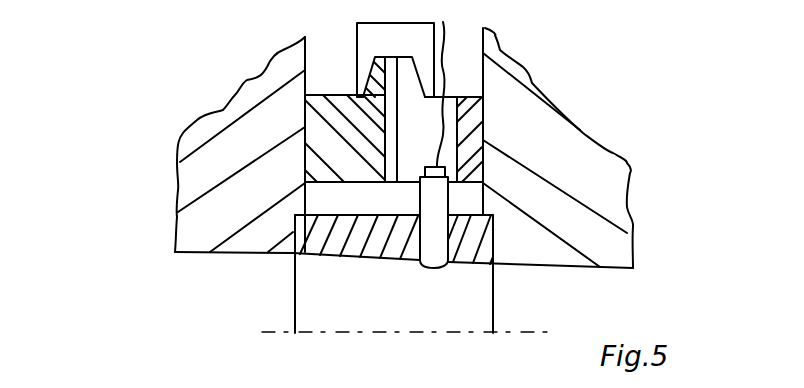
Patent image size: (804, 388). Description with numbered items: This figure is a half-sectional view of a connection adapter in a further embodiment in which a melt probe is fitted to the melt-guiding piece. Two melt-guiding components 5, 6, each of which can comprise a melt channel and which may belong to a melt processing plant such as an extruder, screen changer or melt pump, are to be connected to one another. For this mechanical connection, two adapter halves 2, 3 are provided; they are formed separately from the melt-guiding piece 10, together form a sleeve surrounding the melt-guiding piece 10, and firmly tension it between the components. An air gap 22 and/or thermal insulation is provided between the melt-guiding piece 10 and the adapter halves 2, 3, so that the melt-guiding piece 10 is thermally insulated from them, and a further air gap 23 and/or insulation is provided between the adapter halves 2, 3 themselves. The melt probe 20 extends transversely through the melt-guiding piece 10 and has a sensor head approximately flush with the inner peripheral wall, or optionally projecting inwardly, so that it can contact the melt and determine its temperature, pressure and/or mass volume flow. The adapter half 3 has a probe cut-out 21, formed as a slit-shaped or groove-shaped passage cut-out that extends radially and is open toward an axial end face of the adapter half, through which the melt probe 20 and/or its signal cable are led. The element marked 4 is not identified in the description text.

The adapter half 2 is at (318, 106).
The adapter half 3 is at (473, 127).
The sensor cap 4 is at (368, 40).
The melt-guiding component 5 is at (198, 246).
The melt-guiding component 6 is at (606, 259).
The melt-guiding piece 10 is at (352, 249).
The melt probe 20 is at (438, 258).
The probe cut-out 21 is at (446, 150).
The air gap 22 is at (320, 200).
The air gap 23 is at (396, 127).